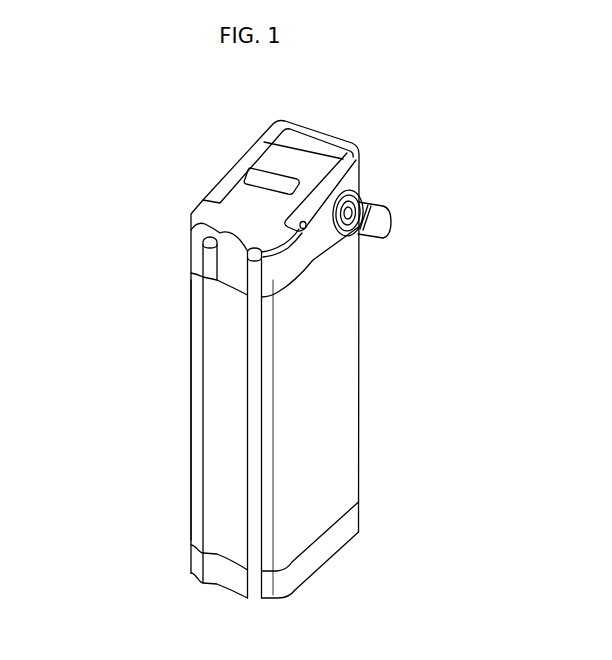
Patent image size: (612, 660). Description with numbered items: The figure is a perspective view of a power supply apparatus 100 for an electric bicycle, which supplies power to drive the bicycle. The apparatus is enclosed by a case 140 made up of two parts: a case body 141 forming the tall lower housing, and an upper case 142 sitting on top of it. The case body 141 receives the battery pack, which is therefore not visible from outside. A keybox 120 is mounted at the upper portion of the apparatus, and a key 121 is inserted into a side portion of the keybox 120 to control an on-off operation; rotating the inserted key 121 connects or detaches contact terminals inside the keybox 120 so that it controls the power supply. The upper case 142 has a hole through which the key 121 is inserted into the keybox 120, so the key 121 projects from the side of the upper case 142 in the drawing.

The power supply apparatus 100 is at (201, 136).
The keybox 120 is at (357, 195).
The key 121 is at (378, 221).
The case 140 is at (112, 228).
The case body 141 is at (197, 400).
The upper case 142 is at (194, 252).